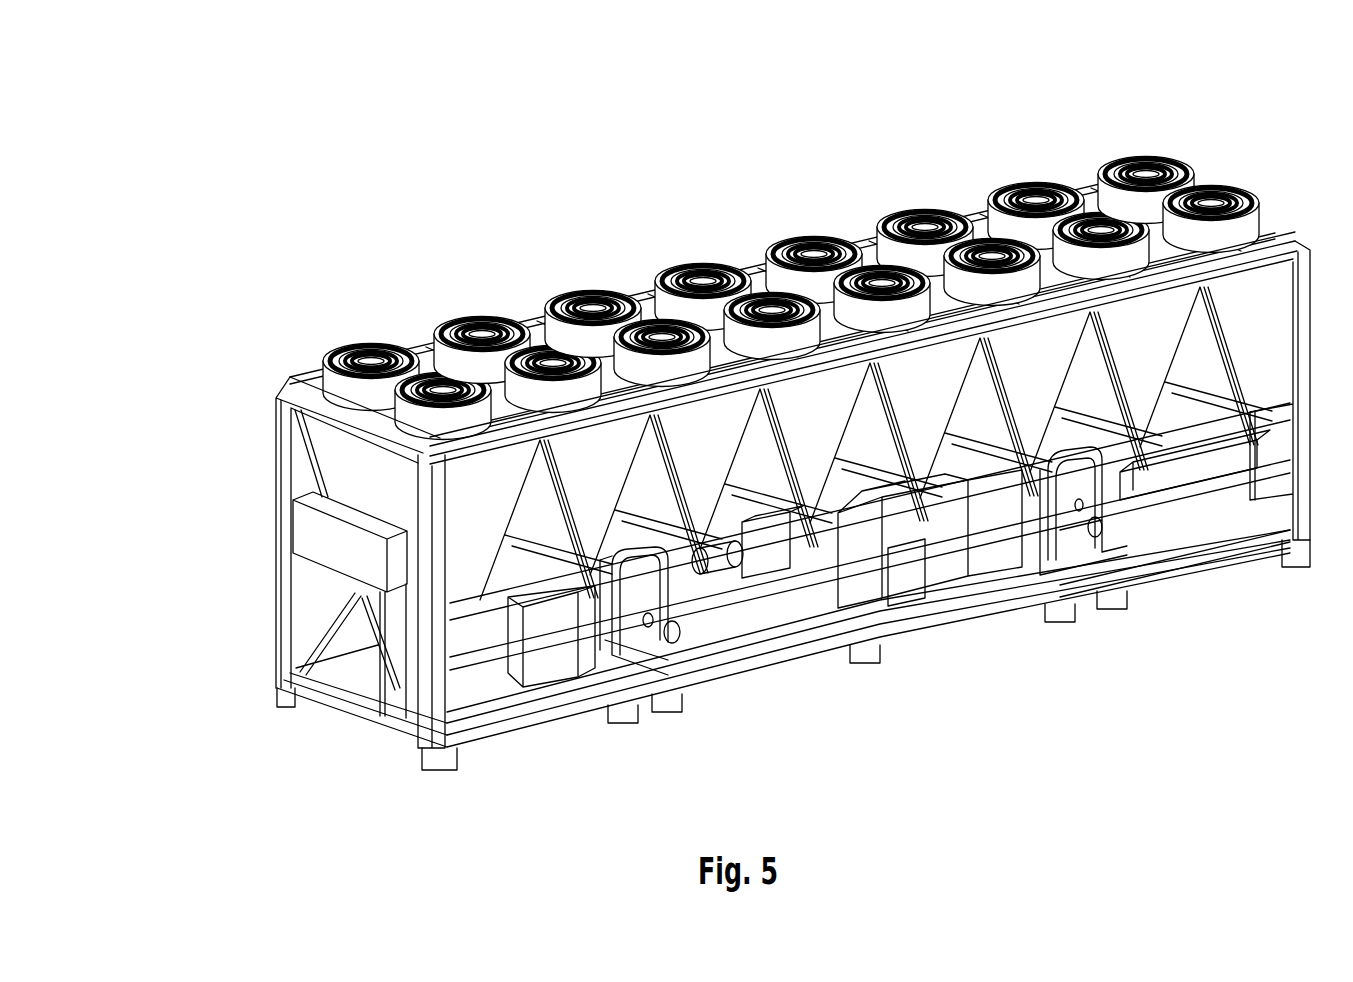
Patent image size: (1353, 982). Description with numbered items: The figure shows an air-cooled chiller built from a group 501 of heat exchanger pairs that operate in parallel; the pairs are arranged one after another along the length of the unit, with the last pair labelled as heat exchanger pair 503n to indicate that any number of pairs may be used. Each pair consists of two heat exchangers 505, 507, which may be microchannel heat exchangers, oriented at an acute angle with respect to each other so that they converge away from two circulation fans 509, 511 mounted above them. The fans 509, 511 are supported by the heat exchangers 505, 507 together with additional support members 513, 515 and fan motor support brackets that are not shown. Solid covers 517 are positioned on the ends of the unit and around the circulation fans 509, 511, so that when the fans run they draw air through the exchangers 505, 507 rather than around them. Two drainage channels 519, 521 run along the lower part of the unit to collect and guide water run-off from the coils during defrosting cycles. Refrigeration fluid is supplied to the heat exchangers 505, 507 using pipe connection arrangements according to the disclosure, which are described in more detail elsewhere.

The group of heat exchanger pairs 501 is at (838, 183).
The heat exchanger pair 503n is at (1183, 120).
The heat exchanger 505 is at (335, 457).
The heat exchanger 507 is at (518, 513).
The circulation fan 509 is at (350, 350).
The circulation fan 511 is at (430, 372).
The support member 513 is at (283, 388).
The support member 515 is at (603, 408).
The solid cover 517 is at (470, 544).
The drainage channel 519 is at (397, 677).
The drainage channel 521 is at (477, 697).